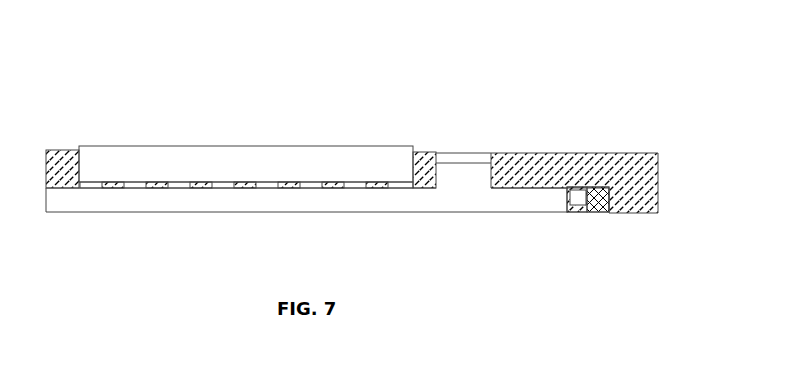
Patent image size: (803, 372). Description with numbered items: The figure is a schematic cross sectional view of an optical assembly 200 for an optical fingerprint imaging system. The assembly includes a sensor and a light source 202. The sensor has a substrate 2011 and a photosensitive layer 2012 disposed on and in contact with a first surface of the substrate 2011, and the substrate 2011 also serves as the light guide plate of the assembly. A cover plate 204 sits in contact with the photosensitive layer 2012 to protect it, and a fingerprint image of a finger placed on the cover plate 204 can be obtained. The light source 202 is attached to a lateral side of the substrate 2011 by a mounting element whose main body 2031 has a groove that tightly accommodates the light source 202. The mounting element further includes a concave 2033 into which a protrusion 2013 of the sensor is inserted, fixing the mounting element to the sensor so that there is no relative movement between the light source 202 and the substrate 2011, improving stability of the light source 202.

The electronic device 200 is at (290, 72).
The substrate 2011 is at (143, 200).
The photosensitive layer 2012 is at (178, 186).
The cover plate 204 is at (268, 163).
The protrusion 2013 is at (453, 181).
The concave 2033 is at (452, 154).
The main body 2031 is at (528, 153).
The light source 202 is at (597, 187).